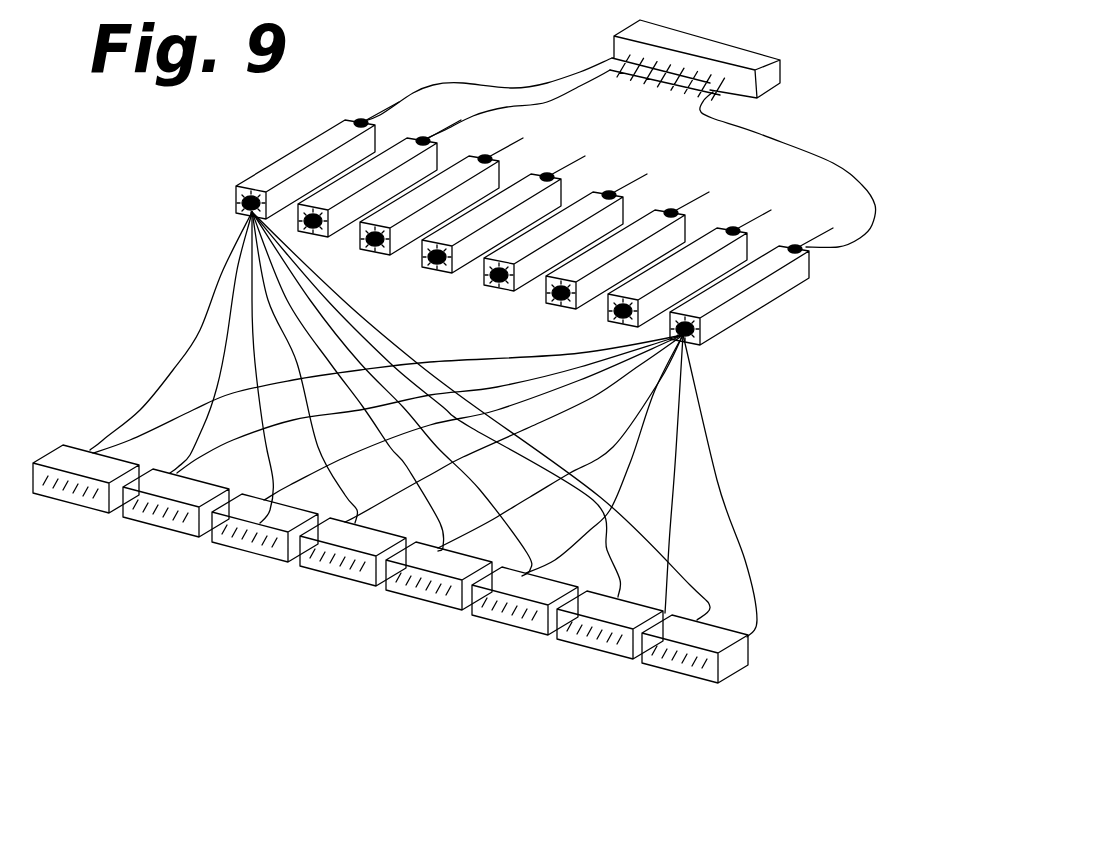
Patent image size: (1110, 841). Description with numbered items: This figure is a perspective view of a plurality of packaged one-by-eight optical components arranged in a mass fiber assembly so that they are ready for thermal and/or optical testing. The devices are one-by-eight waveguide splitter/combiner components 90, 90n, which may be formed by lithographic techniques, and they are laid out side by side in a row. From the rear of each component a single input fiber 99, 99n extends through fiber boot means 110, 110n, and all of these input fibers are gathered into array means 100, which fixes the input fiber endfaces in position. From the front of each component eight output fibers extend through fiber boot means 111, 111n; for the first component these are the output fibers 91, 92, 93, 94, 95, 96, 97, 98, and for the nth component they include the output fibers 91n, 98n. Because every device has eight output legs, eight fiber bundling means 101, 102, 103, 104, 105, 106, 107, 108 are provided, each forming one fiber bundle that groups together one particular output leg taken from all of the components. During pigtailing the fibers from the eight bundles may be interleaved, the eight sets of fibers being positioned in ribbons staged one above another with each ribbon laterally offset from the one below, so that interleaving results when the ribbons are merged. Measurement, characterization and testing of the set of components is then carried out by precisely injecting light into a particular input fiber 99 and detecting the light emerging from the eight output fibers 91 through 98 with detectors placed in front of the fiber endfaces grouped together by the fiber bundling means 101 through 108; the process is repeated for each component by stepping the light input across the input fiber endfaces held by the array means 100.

The waveguide splitter/combiner component 90 is at (778, 292).
The waveguide splitter/combiner component 90n is at (300, 145).
The output fiber 91 is at (723, 493).
The output fiber 92 is at (672, 488).
The output fiber 93 is at (630, 465).
The output fiber 94 is at (613, 452).
The output fiber 95 is at (593, 416).
The output fiber 96 is at (467, 360).
The output fiber 97 is at (513, 385).
The output fiber 98 is at (575, 355).
The output fiber 91n is at (343, 298).
The output fiber 98n is at (198, 332).
The input fiber 99 is at (833, 165).
The input fiber 99n is at (503, 86).
The array means 100 is at (708, 44).
The fiber bundling means 101 is at (678, 665).
The fiber bundling means 102 is at (598, 641).
The fiber bundling means 103 is at (510, 617).
The fiber bundling means 104 is at (430, 590).
The fiber bundling means 105 is at (340, 567).
The fiber bundling means 106 is at (250, 545).
The fiber bundling means 107 is at (157, 521).
The fiber bundling means 108 is at (72, 498).
The fiber boot means 110 is at (803, 247).
The fiber boot means 110n is at (362, 120).
The fiber boot means 111 is at (700, 334).
The fiber boot means 111n is at (240, 207).